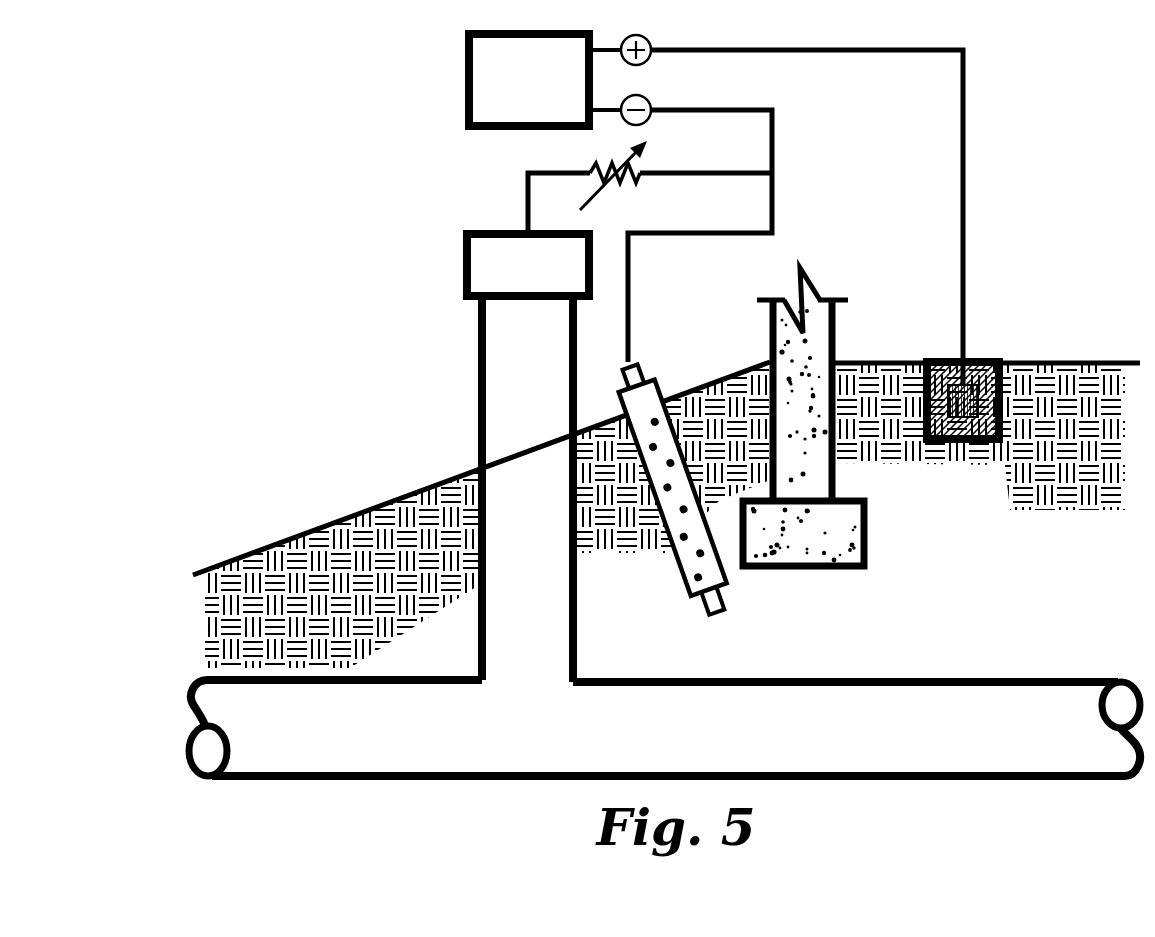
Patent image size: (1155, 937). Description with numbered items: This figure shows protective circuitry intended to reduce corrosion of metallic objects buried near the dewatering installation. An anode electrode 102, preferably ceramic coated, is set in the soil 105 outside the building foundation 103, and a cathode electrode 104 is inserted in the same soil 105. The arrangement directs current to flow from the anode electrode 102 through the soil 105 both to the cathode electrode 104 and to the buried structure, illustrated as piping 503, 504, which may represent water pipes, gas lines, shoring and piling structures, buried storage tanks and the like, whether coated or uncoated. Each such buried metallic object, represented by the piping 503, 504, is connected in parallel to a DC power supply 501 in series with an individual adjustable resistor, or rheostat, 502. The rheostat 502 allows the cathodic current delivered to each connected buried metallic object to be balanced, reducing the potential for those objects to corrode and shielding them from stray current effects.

The anode electrode 102 is at (1008, 360).
The building foundation 103 is at (830, 297).
The cathode electrode 104 is at (632, 362).
The soil 105 is at (403, 495).
The DC power supply 501 is at (465, 86).
The adjustable resistor (rheostat) 502 is at (593, 169).
The buried structure (piping) 503 is at (464, 256).
The buried structure (piping) 504 is at (862, 682).